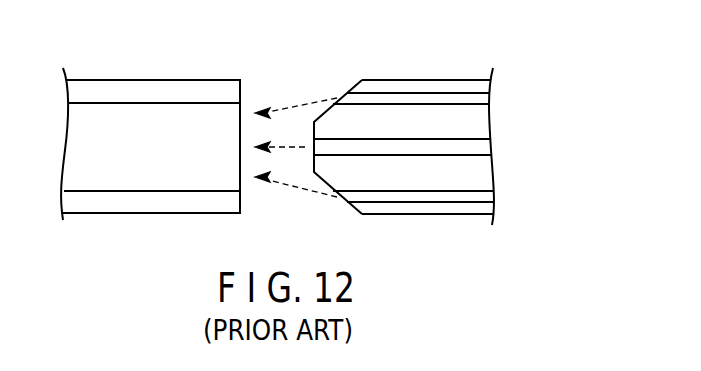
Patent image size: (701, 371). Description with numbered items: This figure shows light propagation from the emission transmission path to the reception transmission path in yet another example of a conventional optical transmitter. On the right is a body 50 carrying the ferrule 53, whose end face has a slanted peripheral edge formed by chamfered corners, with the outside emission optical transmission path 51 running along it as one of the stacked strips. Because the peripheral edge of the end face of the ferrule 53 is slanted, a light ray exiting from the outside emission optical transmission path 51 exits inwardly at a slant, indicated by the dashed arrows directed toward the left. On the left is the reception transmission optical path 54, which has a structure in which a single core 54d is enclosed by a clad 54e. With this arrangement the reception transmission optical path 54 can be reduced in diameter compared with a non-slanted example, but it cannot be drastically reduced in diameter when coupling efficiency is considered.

The optical fiber connector body 50 is at (383, 145).
The emission optical transmission path 51 is at (398, 97).
The ferrule 53 is at (450, 80).
The reception transmission optical path 54 is at (121, 78).
The core 54d is at (202, 117).
The clad 54e is at (147, 200).